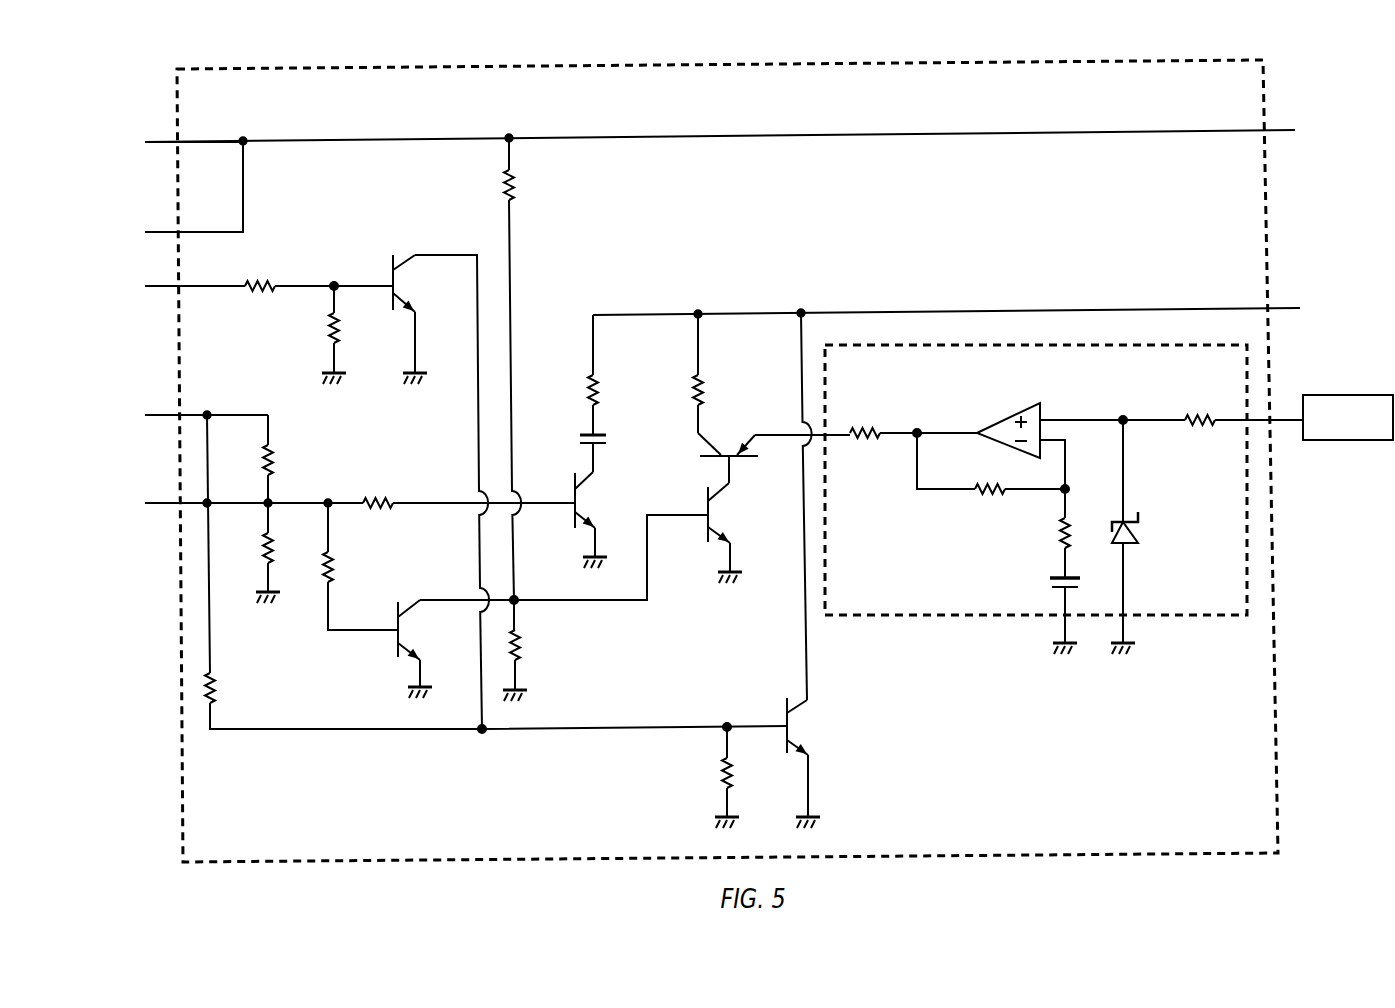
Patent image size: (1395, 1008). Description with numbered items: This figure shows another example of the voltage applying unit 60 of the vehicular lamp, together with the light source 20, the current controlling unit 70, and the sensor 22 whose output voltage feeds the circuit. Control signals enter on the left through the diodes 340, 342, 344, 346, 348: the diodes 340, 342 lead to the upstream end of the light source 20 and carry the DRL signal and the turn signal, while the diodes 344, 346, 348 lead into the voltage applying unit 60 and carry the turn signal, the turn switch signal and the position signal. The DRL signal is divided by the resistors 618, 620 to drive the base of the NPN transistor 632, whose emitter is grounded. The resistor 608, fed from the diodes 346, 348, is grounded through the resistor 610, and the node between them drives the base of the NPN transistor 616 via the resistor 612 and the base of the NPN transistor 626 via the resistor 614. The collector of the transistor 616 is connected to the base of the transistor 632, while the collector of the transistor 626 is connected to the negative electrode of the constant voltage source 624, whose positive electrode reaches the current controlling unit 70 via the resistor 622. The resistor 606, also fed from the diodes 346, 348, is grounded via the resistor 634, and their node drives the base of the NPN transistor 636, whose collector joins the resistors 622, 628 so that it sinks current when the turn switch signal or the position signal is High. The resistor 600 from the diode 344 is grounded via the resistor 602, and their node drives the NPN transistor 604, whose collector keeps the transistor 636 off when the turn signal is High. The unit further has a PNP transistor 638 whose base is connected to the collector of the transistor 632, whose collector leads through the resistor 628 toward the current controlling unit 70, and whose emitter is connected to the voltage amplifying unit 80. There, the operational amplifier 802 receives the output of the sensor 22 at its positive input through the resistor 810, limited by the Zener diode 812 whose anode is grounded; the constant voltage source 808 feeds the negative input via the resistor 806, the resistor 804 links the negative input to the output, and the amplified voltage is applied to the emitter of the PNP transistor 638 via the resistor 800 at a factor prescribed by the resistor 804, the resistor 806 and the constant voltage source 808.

The light source 20 is at (735, 130).
The sensor 22 is at (1350, 441).
The voltage applying unit 60 is at (1280, 731).
The current controlling unit 70 is at (961, 308).
The voltage amplifying unit 80 is at (1195, 616).
The diode 340 is at (173, 142).
The diode 342 is at (173, 194).
The diode 344 is at (174, 286).
The diode 346 is at (185, 415).
The diode 348 is at (233, 503).
The resistor 600 is at (262, 280).
The resistor 602 is at (322, 330).
The NPN transistor 604 is at (413, 285).
The resistor 606 is at (217, 688).
The resistor 608 is at (276, 459).
The resistor 610 is at (281, 549).
The resistor 612 is at (336, 566).
The resistor 614 is at (380, 497).
The NPN transistor 616 is at (413, 632).
The resistor 618 is at (521, 184).
The resistor 620 is at (523, 644).
The resistor 622 is at (588, 390).
The constant voltage source 624 is at (584, 433).
The NPN transistor 626 is at (570, 521).
The resistor 628 is at (690, 390).
The NPN transistor 632 is at (700, 497).
The resistor 634 is at (717, 773).
The NPN transistor 636 is at (778, 712).
The PNP transistor 638 is at (731, 432).
The resistor 800 is at (867, 423).
The operational amplifier 802 is at (1005, 412).
The resistor 804 is at (990, 498).
The resistor 806 is at (1056, 535).
The constant voltage source 808 is at (1055, 586).
The resistor 810 is at (1198, 412).
The Zener diode 812 is at (1135, 511).